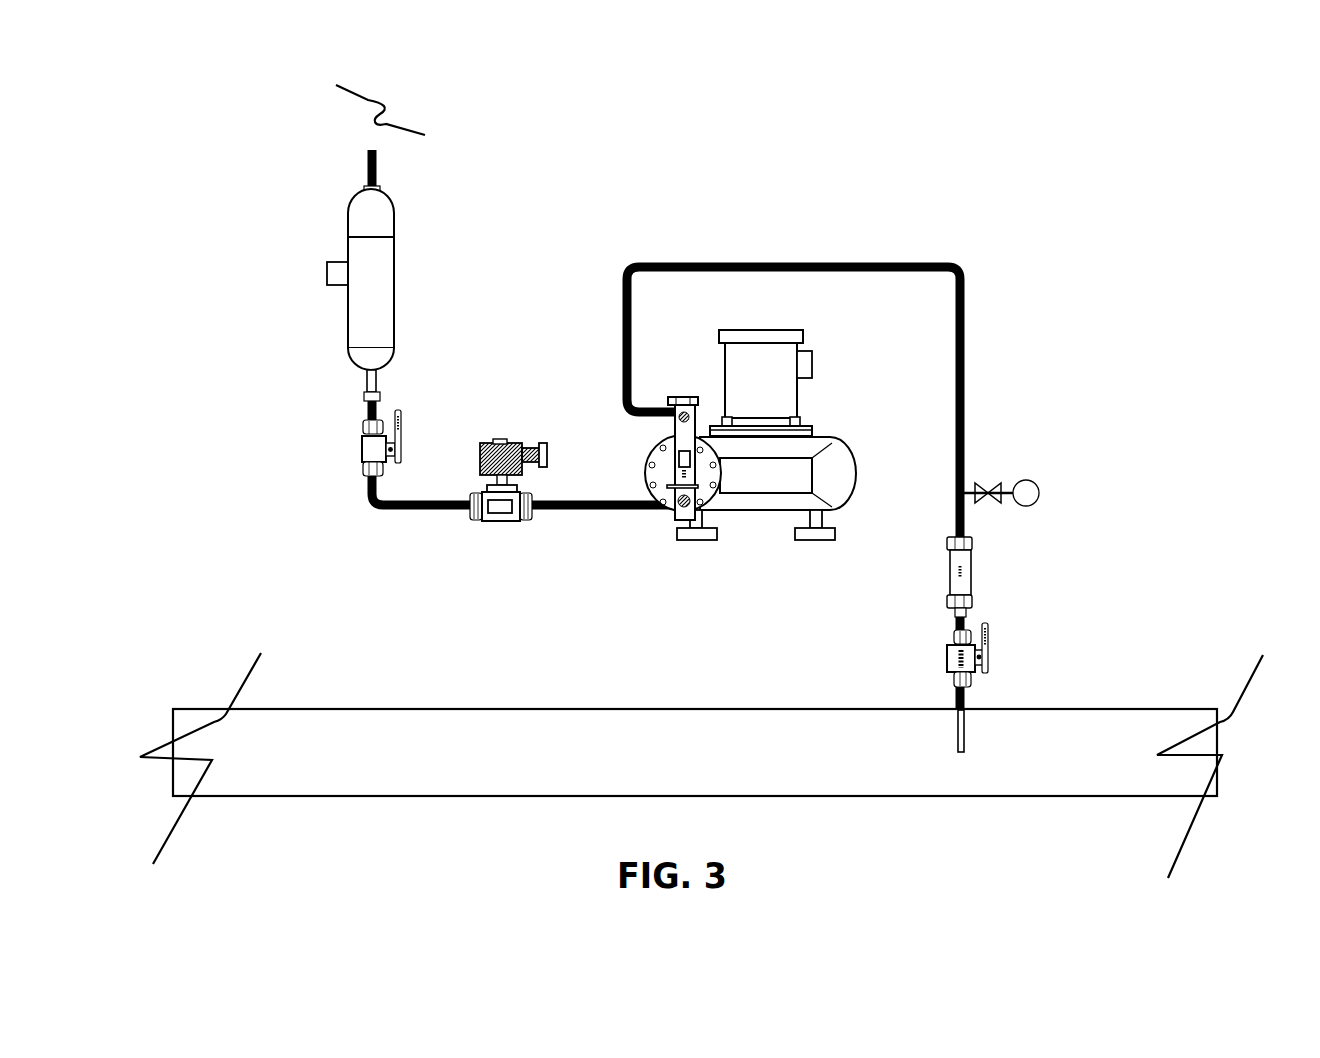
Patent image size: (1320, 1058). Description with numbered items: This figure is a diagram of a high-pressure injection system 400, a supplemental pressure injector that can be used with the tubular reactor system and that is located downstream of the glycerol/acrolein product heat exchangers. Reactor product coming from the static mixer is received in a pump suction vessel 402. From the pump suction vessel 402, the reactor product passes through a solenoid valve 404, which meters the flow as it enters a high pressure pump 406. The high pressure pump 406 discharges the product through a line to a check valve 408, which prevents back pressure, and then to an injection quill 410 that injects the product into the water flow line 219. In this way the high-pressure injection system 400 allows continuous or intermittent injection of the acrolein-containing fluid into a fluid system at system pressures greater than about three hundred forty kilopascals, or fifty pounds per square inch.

The high-pressure injection system 400 is at (924, 200).
The pump suction vessel 402 is at (346, 307).
The solenoid valve 404 is at (477, 515).
The high pressure pump 406 is at (765, 497).
The check valve 408 is at (975, 563).
The injection quill 410 is at (967, 723).
The water flow line 219 is at (710, 768).